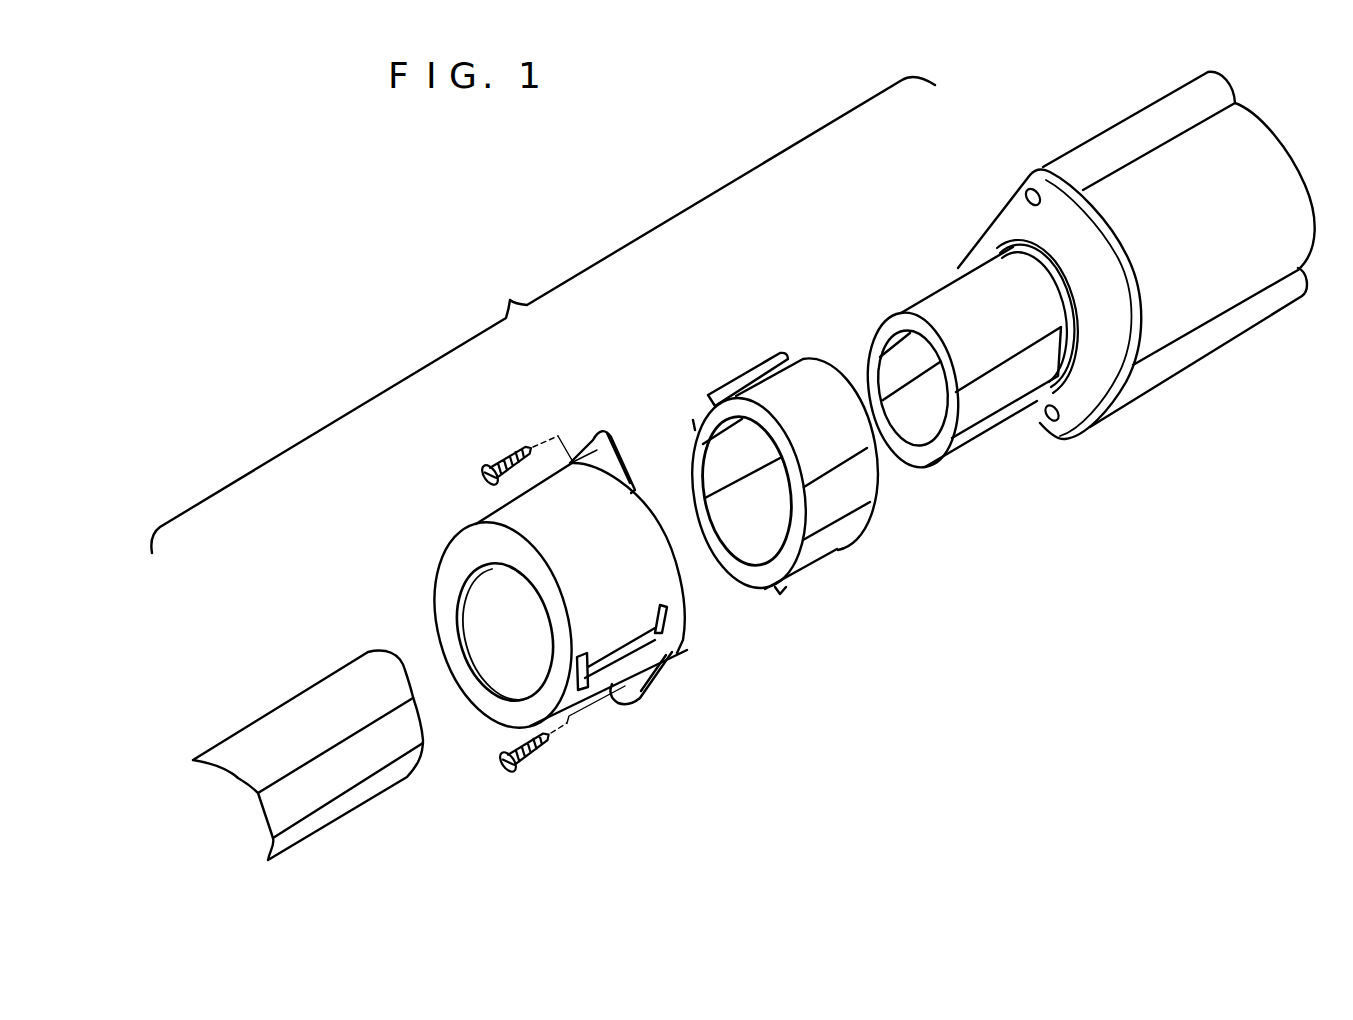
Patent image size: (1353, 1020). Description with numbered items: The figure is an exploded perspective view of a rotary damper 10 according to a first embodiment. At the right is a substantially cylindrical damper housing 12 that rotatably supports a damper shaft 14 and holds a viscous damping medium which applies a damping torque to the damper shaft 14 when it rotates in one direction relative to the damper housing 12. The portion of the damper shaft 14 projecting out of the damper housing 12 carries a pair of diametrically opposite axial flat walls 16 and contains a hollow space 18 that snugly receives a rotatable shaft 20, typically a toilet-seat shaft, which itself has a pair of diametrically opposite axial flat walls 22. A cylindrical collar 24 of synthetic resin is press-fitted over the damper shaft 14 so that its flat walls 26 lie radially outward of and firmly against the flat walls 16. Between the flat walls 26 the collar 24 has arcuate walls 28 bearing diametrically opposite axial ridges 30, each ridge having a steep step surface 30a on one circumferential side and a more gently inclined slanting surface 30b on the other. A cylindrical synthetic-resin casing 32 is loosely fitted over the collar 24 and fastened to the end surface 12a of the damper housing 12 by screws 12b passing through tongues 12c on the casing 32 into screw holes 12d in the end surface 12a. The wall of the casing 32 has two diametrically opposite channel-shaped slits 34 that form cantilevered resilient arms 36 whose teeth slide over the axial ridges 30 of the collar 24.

The rotary damper 10 is at (543, 315).
The damper housing 12 is at (1207, 307).
The end surface 12a is at (1107, 267).
The screws 12b is at (501, 448).
The tongues 12c is at (600, 424).
The screw holes 12d is at (1025, 180).
The damper shaft 14 is at (957, 300).
The flat walls 16 is at (868, 370).
The hollow space 18 is at (922, 428).
The rotatable shaft 20 is at (285, 715).
The flat walls 22 is at (337, 780).
The collar 24 is at (805, 388).
The flat walls 26 is at (682, 471).
The arcuate walls 28 is at (780, 397).
The axial ridges 30 is at (703, 413).
The step surface 30a is at (746, 377).
The slanting surface 30b is at (690, 423).
The casing 32 is at (491, 508).
The channel-shaped slits 34 is at (600, 702).
The cantilevered resilient arms 36 is at (607, 648).